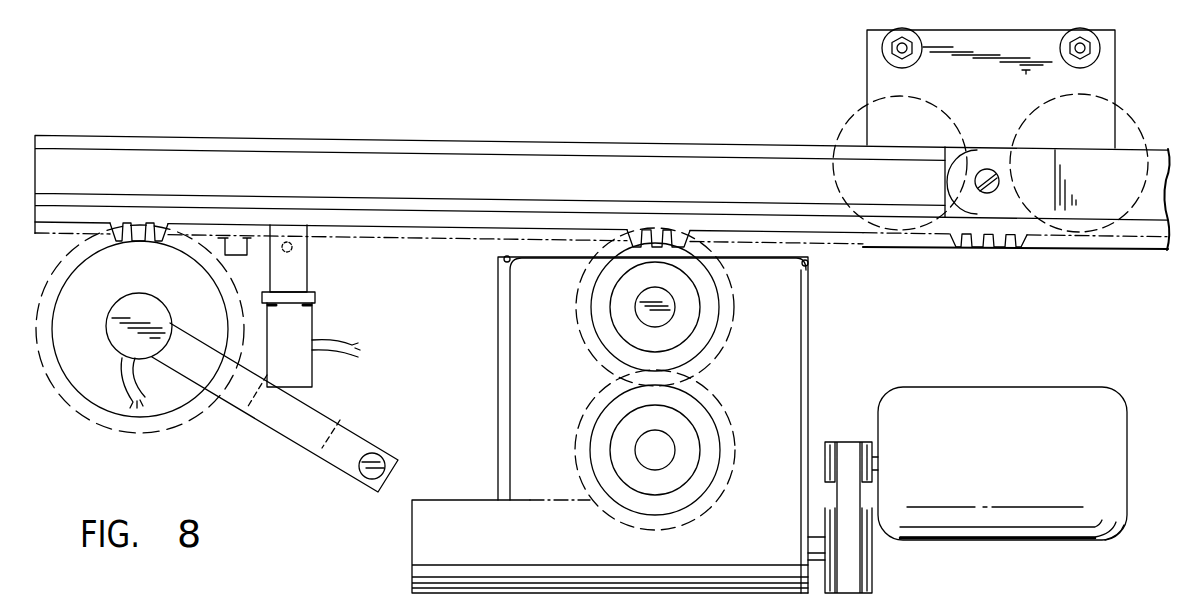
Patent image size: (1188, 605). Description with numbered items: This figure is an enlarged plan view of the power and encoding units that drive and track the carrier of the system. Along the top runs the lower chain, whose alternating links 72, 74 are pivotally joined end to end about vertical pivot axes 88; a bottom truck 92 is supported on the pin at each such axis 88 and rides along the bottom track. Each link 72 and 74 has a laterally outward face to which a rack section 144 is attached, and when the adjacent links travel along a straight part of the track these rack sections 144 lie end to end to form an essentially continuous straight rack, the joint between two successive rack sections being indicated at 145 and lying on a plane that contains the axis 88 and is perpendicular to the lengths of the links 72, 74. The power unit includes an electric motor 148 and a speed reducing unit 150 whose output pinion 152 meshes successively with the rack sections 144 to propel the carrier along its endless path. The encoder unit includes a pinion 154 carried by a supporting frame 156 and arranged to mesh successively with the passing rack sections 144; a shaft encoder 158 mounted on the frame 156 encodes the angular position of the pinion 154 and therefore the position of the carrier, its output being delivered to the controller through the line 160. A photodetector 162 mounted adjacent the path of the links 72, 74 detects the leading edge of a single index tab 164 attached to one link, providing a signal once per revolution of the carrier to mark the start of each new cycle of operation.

The link 72 is at (1152, 148).
The link 74 is at (731, 144).
The vertical pivot axis 88 is at (987, 169).
The bottom truck 92 is at (877, 77).
The rack section 144 is at (837, 223).
The joint between successive rack sections 145 is at (1002, 237).
The electric motor 148 is at (1008, 530).
The speed reducing unit 150 is at (795, 360).
The output pinion 152 is at (723, 302).
The pinion 154 is at (67, 373).
The supporting frame 156 is at (283, 420).
The shaft encoder 158 is at (148, 292).
The line 160 is at (125, 388).
The photodetector 162 is at (300, 348).
The index tab 164 is at (225, 248).